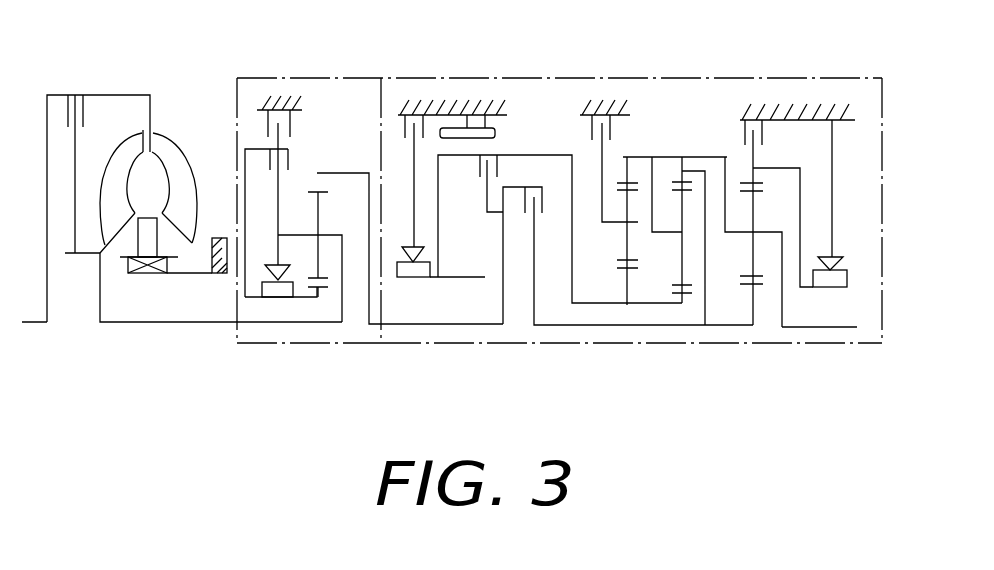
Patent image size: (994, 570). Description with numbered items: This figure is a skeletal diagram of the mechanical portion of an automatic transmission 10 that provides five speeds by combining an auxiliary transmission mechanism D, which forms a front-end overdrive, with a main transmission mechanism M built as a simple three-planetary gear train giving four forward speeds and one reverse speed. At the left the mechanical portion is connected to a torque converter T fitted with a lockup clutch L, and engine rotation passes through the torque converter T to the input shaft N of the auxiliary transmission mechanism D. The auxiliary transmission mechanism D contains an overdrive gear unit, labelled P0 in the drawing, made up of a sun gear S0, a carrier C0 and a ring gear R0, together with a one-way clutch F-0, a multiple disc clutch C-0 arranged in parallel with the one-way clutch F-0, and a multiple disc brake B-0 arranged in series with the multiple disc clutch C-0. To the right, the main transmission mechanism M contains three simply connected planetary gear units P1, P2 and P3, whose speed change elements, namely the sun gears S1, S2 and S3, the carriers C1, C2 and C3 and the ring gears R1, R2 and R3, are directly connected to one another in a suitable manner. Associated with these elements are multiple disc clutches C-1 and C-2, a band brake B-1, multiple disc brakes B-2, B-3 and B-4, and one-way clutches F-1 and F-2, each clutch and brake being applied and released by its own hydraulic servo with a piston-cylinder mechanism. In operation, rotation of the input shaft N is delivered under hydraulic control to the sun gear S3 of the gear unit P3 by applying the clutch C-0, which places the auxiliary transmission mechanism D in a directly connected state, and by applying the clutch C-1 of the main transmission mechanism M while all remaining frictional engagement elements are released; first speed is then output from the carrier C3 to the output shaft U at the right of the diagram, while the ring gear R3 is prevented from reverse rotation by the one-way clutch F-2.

The automatic transmission 10 is at (529, 70).
The torque converter T is at (160, 90).
The lockup clutch L is at (77, 94).
The input shaft N is at (155, 323).
The auxiliary transmission mechanism D is at (355, 345).
The main transmission mechanism M is at (690, 78).
The output shaft U is at (838, 329).
The multiple disc brake B-0 is at (270, 124).
The multiple disc clutch C-0 is at (264, 153).
The one-way clutch F-0 is at (268, 300).
The ring gear R0 is at (318, 190).
The carrier C0 is at (325, 234).
The overdrive planetary pinion P0 is at (300, 308).
The sun gear S0 is at (329, 289).
The band brake B-1 is at (473, 122).
The multiple disc brake B-2 is at (404, 118).
The multiple disc brake B-3 is at (592, 135).
The multiple disc brake B-4 is at (755, 116).
The multiple disc clutch C-1 is at (545, 210).
The multiple disc clutch C-2 is at (472, 165).
The one-way clutch F-1 is at (413, 278).
The one-way clutch F-2 is at (823, 289).
The ring gear R1 is at (641, 161).
The sun gear S1 is at (619, 268).
The planetary gear unit P1 is at (616, 312).
The carrier C1 is at (608, 226).
The ring gear R2 is at (682, 156).
The sun gear S2 is at (672, 292).
The planetary gear unit P2 is at (679, 312).
The carrier C2 is at (667, 231).
The ring gear R3 is at (742, 184).
The sun gear S3 is at (738, 284).
The planetary gear unit P3 is at (760, 320).
The carrier C3 is at (770, 190).